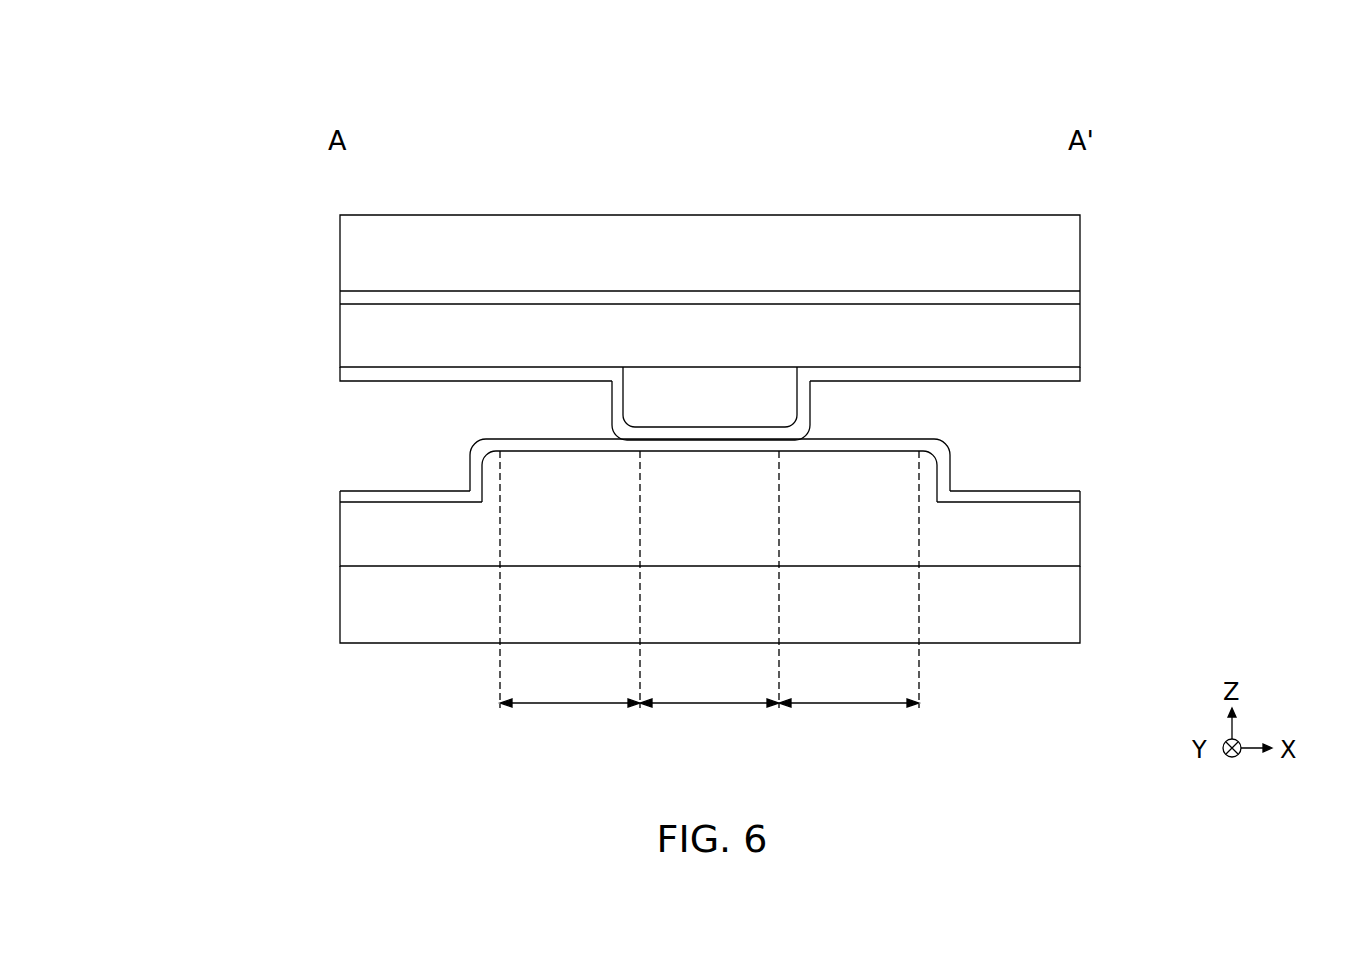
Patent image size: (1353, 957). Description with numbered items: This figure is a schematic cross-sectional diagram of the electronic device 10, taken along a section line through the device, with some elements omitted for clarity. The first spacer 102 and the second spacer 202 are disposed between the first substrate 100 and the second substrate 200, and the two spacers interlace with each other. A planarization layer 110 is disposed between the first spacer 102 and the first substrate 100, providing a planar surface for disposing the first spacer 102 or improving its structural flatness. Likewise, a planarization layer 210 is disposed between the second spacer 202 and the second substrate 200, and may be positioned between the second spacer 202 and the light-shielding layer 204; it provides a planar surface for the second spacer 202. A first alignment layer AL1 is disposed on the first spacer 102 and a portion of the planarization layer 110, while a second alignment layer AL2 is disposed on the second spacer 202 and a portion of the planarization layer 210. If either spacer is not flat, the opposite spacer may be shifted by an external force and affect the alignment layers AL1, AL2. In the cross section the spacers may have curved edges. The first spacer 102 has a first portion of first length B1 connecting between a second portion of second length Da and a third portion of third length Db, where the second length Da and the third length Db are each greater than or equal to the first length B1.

The electronic device 10 is at (238, 100).
The second substrate 200 is at (1068, 262).
The light-shielding layer 204 is at (1068, 297).
The planarization layer 210 is at (1068, 334).
The first alignment layer AL1 is at (355, 374).
The second spacer 202 is at (640, 398).
The first spacer 102 is at (478, 475).
The second alignment layer AL2 is at (345, 494).
The planarization layer 110 is at (1066, 535).
The first substrate 100 is at (1066, 603).
The second length Da is at (570, 682).
The first length B1 is at (709, 682).
The third length Db is at (849, 682).